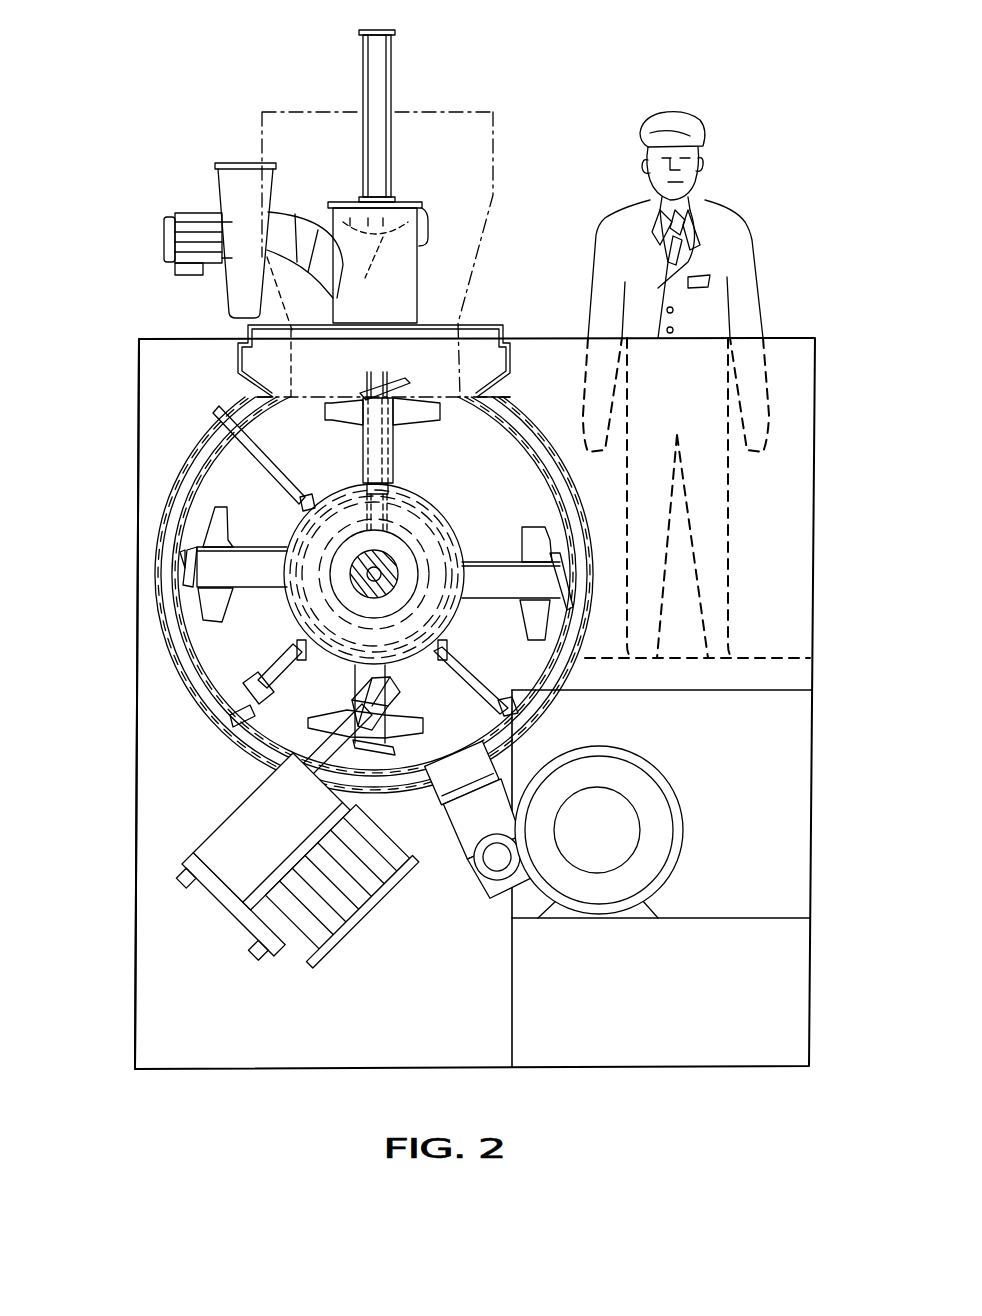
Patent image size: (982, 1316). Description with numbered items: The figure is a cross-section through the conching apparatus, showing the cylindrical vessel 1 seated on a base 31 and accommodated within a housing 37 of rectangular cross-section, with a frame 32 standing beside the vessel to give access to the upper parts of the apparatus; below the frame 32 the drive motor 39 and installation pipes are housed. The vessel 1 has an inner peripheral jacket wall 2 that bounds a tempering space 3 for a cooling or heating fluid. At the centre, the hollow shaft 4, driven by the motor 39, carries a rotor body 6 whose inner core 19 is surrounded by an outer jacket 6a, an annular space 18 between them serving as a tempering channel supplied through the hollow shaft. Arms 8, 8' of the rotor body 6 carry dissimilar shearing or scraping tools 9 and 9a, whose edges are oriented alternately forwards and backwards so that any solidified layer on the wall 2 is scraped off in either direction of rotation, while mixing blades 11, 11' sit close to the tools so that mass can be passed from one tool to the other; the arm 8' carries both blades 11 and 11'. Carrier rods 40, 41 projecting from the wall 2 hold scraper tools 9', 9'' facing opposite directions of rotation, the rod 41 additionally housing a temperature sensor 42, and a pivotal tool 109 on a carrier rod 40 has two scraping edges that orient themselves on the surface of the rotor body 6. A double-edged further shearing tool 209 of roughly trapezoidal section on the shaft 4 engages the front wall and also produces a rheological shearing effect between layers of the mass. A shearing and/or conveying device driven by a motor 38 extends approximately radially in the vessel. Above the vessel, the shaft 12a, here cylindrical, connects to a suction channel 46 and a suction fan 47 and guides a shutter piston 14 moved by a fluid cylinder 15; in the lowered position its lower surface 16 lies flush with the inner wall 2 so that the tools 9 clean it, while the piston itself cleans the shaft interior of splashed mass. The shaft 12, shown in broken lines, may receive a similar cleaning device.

The cylindrical vessel 1 is at (200, 438).
The inner peripheral jacket wall 2 is at (196, 525).
The tempering space 3 is at (203, 690).
The hollow shaft 4 is at (374, 574).
The rotor body 6 is at (442, 505).
The outer jacket 6a is at (446, 630).
The arm 8 is at (378, 512).
The arm (carrier rod) 8' is at (492, 621).
The shearing or scraping tool 9 is at (462, 616).
The scraper or shearing tool 9' is at (317, 682).
The scraper or shearing tool 9'' is at (454, 699).
The shearing or scraping tool 9a is at (197, 551).
The mixing blade 11 is at (354, 561).
The mixing blade 11' is at (574, 628).
The shaft 12 is at (493, 140).
The shaft 12a is at (426, 208).
The shutter piston 14 is at (348, 197).
The fluid cylinder 15 is at (382, 62).
The lower surface of the piston 16 is at (374, 299).
The annular space (tempering channel) 18 is at (327, 492).
The inner core 19 is at (455, 540).
The base 31 is at (137, 975).
The frame 32 is at (835, 565).
The housing 37 is at (139, 440).
The motor 38 is at (358, 928).
The drive motor 39 is at (655, 758).
The carrier rod 40 is at (255, 400).
The carrier rod 41 is at (278, 655).
The temperature sensor 42 is at (248, 728).
The suction channel 46 is at (292, 226).
The suction fan 47 is at (235, 193).
The pivotal scraper or shearing tool 109 is at (303, 505).
The double-edged further shearing tool 209 is at (383, 372).